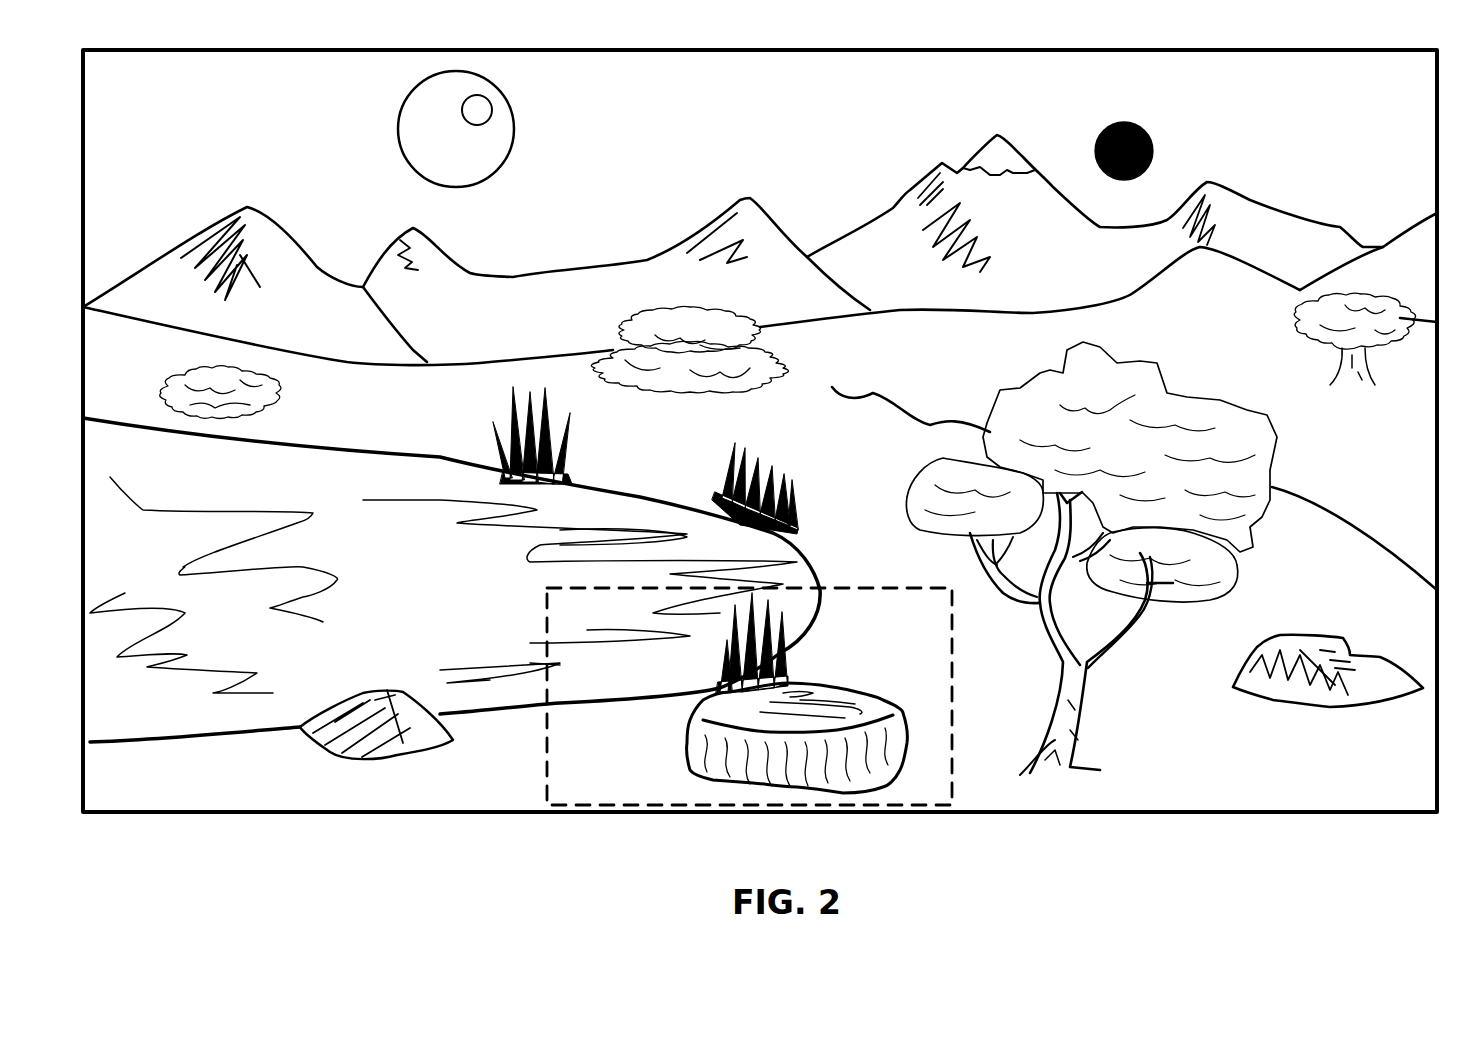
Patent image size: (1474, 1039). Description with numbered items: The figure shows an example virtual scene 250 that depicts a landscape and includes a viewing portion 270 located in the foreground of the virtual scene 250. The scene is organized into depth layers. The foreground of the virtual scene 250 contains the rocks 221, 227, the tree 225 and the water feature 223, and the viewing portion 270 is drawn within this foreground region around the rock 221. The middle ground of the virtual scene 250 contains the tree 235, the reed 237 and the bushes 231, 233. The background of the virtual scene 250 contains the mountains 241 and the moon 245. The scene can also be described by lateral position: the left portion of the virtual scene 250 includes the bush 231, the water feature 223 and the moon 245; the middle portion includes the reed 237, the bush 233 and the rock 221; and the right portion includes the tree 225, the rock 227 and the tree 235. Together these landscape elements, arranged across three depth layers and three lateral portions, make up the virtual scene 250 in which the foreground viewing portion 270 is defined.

The virtual scene 250 is at (1368, 24).
The moon 245 is at (480, 164).
The mountains 241 is at (518, 334).
The bush 231 is at (255, 370).
The bush 233 is at (752, 312).
The tree 235 is at (1384, 294).
The tree 225 is at (1189, 390).
The reed 237 is at (575, 446).
The water feature 223 is at (445, 591).
The rock 221 is at (859, 682).
The rock 227 is at (1319, 625).
The viewing portion 270 is at (955, 703).